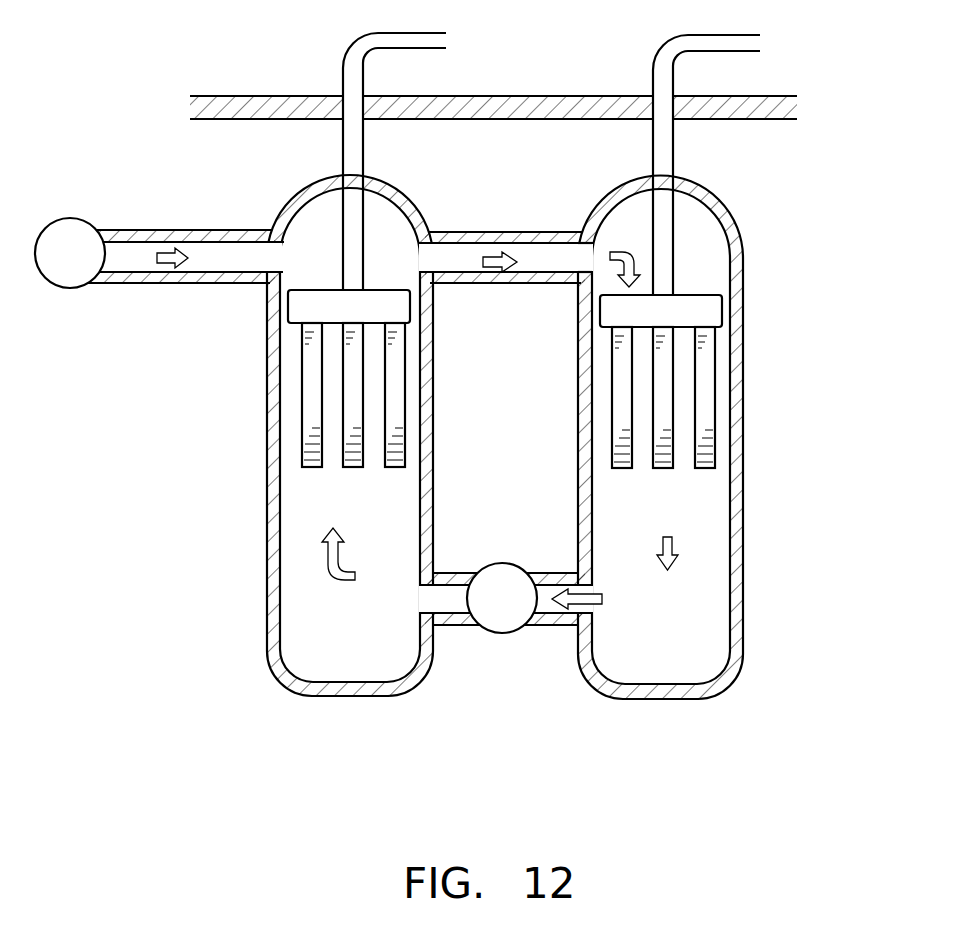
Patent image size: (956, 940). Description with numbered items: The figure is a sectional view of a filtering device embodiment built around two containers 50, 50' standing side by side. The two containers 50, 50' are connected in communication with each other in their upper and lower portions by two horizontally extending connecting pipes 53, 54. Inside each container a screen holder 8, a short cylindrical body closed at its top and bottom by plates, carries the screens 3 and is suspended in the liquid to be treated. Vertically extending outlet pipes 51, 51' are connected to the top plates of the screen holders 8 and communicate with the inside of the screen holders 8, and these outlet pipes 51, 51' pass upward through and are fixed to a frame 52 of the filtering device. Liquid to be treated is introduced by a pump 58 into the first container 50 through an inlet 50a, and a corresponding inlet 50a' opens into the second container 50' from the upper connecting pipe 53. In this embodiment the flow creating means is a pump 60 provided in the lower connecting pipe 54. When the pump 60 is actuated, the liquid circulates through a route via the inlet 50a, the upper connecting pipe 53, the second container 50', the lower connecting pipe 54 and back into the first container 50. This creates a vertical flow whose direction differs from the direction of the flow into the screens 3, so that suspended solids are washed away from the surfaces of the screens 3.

The screen 3 is at (308, 405).
The screen holder 8 is at (287, 310).
The container 50 is at (283, 435).
The container 50' is at (731, 437).
The inlet 50a is at (177, 228).
The inlet of second tank 50a' is at (534, 222).
The outlet pipe 51 is at (313, 161).
The outlet pipe 51' is at (618, 165).
The frame 52 is at (505, 96).
The connecting pipe 53 is at (497, 278).
The connecting pipe 54 is at (468, 620).
The pump 58 is at (70, 218).
The pump 60 is at (520, 618).